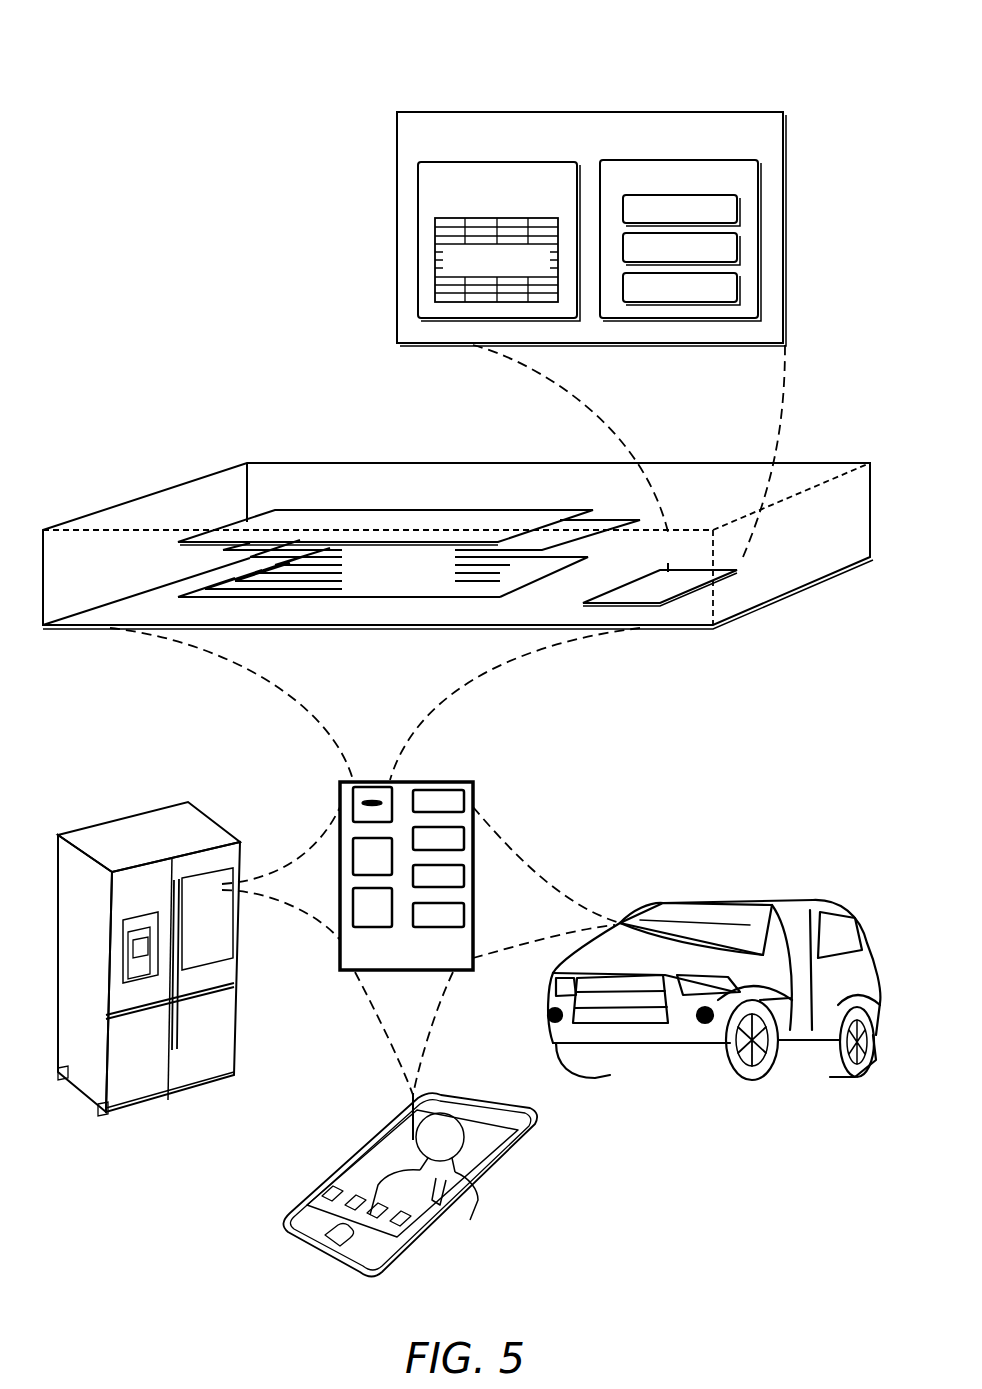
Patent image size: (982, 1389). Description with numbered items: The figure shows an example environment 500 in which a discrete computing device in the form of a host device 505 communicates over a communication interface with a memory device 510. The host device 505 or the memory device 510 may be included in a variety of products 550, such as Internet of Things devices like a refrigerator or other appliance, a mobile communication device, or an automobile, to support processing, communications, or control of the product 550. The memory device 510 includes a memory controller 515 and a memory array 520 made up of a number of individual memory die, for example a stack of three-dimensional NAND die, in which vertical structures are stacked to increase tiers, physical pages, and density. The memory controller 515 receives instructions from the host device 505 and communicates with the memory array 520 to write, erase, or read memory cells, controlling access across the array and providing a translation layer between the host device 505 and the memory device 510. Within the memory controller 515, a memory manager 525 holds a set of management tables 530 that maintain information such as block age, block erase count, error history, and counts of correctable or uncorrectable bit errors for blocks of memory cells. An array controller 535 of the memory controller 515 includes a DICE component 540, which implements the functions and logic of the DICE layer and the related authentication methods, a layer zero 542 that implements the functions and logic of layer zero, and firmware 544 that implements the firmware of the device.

The environment 500 is at (766, 35).
The host device 505 is at (340, 787).
The memory device 510 is at (190, 485).
The memory controller 515 is at (397, 112).
The memory array 520 is at (462, 506).
The memory manager 525 is at (418, 196).
The management tables 530 is at (435, 252).
The array controller 535 is at (762, 193).
The DICE component 540 is at (737, 212).
The layer zero 542 is at (737, 253).
The firmware 544 is at (737, 291).
The products 550 is at (145, 813).